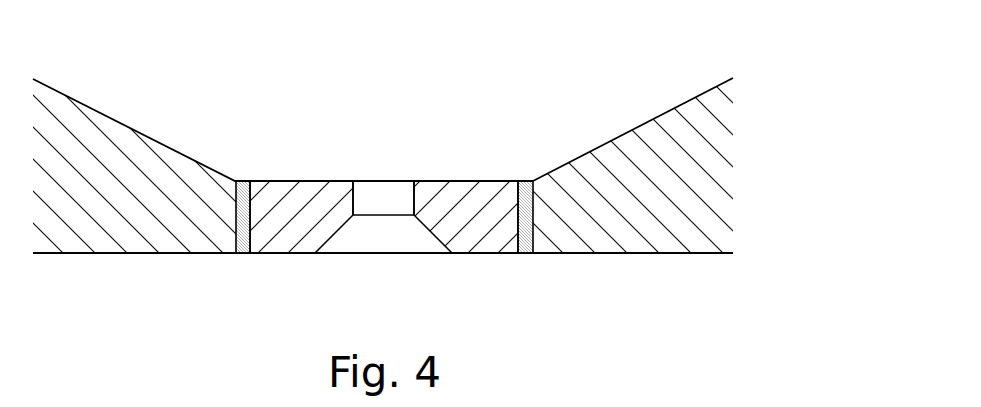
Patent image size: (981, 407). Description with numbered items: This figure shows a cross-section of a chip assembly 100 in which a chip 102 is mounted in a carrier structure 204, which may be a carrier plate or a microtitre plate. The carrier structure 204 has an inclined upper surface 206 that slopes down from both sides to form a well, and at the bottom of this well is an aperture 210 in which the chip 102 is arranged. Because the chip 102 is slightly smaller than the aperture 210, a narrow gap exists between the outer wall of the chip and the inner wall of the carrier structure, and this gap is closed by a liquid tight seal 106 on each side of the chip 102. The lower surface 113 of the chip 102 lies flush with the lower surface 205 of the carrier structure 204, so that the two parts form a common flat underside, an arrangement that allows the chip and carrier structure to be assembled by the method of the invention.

The chip assembly 100 is at (451, 170).
The chip 102 is at (315, 187).
The liquid tight seal 106 is at (243, 255).
The lower surface of the chip 113 is at (482, 257).
The carrier structure 204 is at (727, 220).
The lower surface of the carrier structure 205 is at (633, 257).
The inclined upper surface 206 is at (628, 132).
The aperture 210 is at (448, 153).